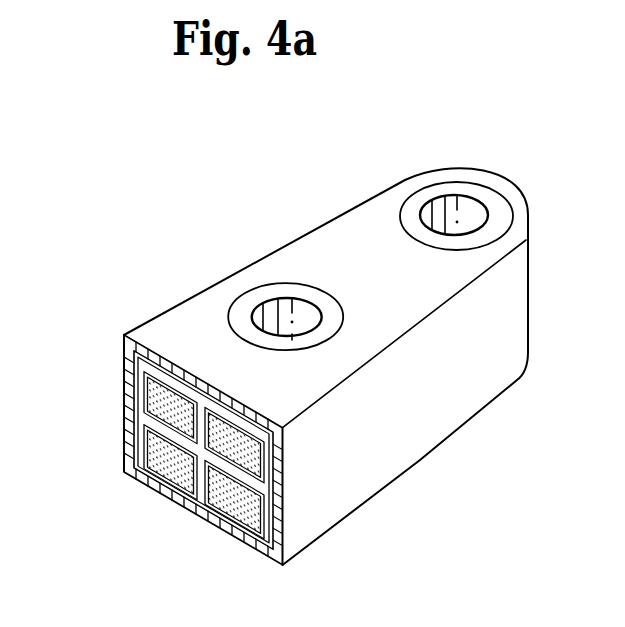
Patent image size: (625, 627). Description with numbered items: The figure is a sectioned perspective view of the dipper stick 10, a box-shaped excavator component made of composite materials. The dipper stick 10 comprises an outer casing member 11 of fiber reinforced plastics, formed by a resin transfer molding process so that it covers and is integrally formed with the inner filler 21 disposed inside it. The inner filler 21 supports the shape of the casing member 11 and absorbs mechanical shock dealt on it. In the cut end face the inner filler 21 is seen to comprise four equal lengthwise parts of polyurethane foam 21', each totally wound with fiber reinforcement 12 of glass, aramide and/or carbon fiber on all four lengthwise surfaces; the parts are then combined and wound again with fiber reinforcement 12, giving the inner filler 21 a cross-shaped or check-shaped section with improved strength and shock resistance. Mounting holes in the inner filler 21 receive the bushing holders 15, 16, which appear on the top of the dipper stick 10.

The dipper stick 10 is at (430, 463).
The outer casing member 11 is at (121, 378).
The fiber reinforcement 12 is at (123, 336).
The bushing holder 15 is at (448, 190).
The bushing holder 16 is at (255, 298).
The inner filler 21 is at (168, 482).
The polyurethane foam 21' is at (164, 427).